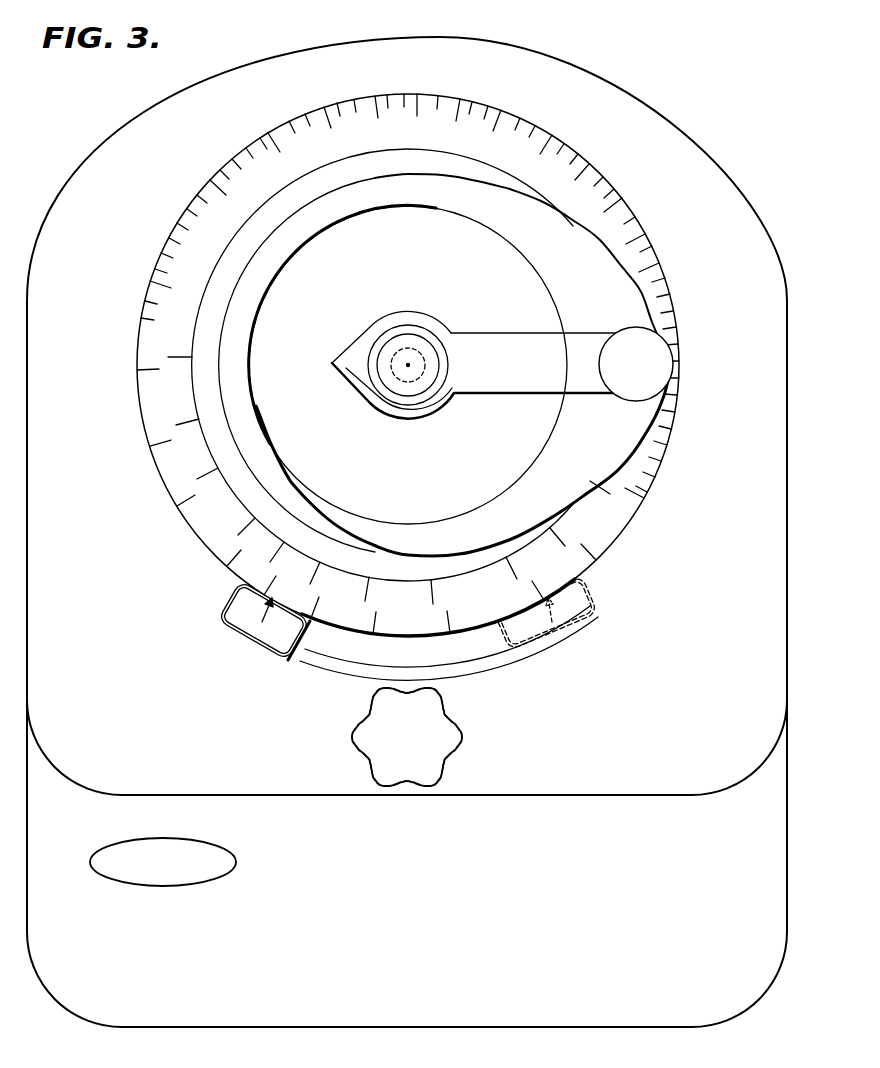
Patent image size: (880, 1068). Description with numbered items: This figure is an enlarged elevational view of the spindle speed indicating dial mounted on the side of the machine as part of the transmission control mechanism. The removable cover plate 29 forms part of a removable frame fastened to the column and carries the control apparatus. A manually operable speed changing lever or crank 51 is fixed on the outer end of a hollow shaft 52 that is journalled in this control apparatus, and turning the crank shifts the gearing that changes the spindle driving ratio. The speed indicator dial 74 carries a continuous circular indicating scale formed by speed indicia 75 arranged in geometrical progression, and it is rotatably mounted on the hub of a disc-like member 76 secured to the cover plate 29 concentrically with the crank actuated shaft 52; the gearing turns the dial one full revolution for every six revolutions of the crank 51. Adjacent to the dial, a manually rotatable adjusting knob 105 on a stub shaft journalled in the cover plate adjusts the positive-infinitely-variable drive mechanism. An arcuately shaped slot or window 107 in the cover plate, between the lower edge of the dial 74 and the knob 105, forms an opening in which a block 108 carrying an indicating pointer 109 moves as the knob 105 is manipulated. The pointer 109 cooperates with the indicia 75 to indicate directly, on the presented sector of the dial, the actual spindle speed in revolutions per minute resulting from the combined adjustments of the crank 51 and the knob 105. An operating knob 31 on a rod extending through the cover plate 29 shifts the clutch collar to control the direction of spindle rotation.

The removable cover plate 29 is at (693, 152).
The operating knob 31 is at (152, 876).
The speed changing lever or crank 51 is at (497, 340).
The hollow shaft 52 is at (400, 377).
The speed indicator dial 74 is at (598, 543).
The speed indicia 75 is at (652, 481).
The disc-like member 76 is at (512, 263).
The adjusting lever or knob 105 is at (462, 735).
The arcuately shaped slot or window 107 is at (485, 670).
The block 108 is at (253, 633).
The indicating pointer 109 is at (215, 608).